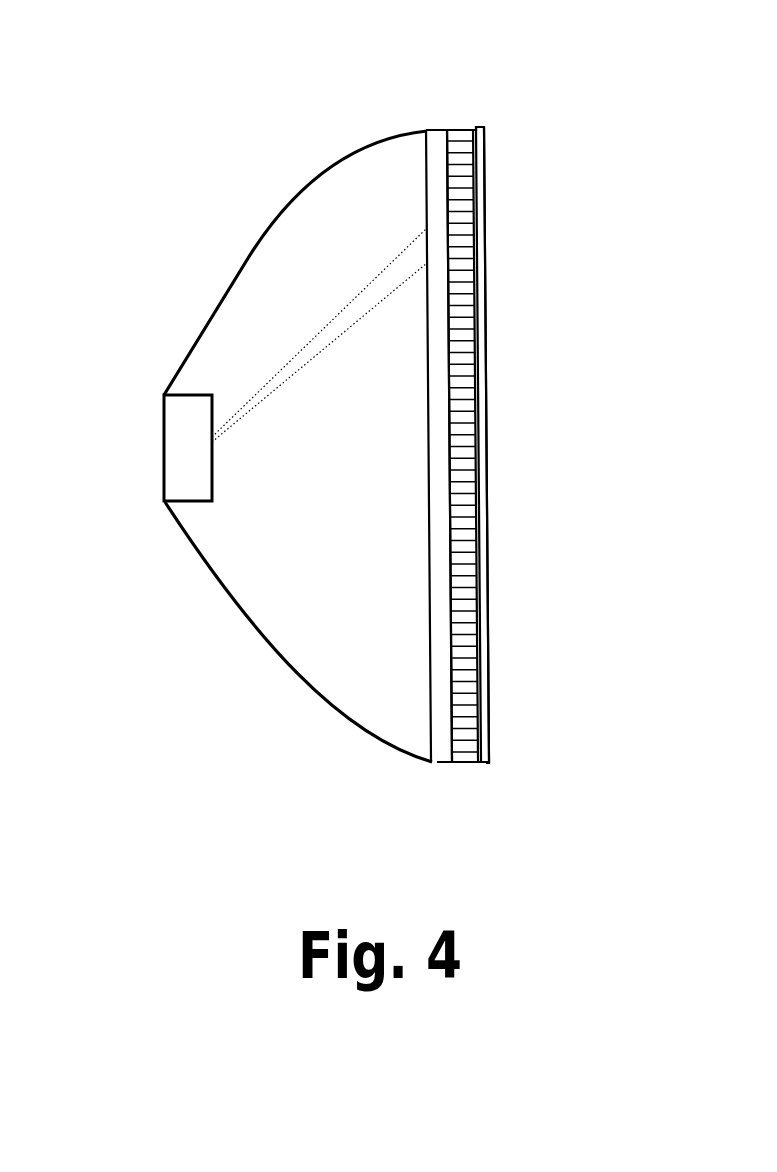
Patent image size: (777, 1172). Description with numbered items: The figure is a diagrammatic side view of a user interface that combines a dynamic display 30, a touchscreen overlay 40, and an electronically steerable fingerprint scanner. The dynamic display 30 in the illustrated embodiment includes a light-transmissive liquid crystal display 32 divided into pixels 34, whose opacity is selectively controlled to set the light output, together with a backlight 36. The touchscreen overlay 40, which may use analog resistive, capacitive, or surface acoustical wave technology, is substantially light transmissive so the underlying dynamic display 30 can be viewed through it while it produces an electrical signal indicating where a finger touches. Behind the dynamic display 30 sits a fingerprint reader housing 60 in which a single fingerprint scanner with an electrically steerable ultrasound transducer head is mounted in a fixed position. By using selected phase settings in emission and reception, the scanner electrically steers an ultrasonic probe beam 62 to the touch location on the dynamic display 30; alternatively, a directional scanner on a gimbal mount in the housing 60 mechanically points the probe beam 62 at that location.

The dynamic display 30 is at (475, 770).
The liquid crystal display 32 is at (457, 129).
The pixels 34 is at (462, 421).
The backlight 36 is at (437, 129).
The touchscreen overlay 40 is at (483, 167).
The fingerprint reader housing 60 is at (292, 198).
The ultrasonic probe beam 62 is at (330, 333).